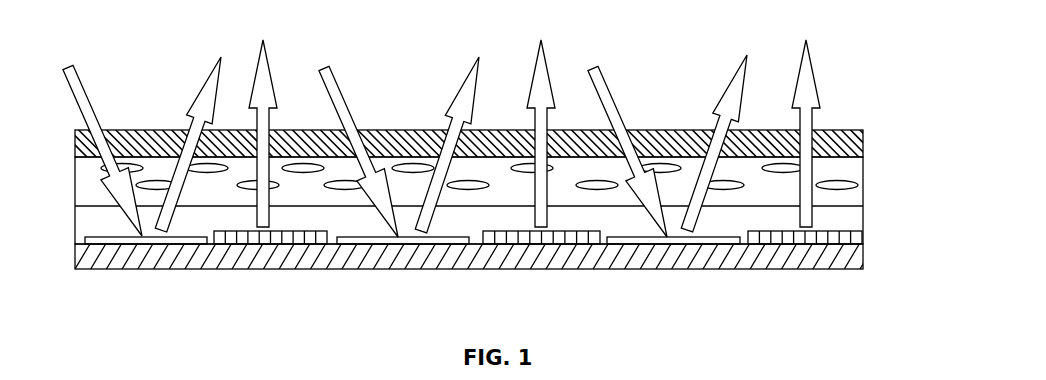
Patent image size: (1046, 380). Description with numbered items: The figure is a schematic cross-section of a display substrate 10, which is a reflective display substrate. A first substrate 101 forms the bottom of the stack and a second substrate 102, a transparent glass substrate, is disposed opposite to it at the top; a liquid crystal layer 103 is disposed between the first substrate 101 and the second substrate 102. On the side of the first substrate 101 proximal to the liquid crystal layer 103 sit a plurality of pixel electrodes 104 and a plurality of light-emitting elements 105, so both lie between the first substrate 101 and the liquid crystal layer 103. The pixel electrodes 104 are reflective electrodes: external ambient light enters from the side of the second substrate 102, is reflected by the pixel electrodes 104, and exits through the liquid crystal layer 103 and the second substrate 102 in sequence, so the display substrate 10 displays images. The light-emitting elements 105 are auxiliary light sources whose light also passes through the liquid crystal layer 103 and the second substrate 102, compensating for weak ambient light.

The display substrate 10 is at (72, 34).
The first substrate 101 is at (866, 258).
The second substrate 102 is at (866, 140).
The liquid crystal layer 103 is at (866, 178).
The pixel electrodes 104 is at (722, 250).
The light-emitting elements 105 is at (850, 239).